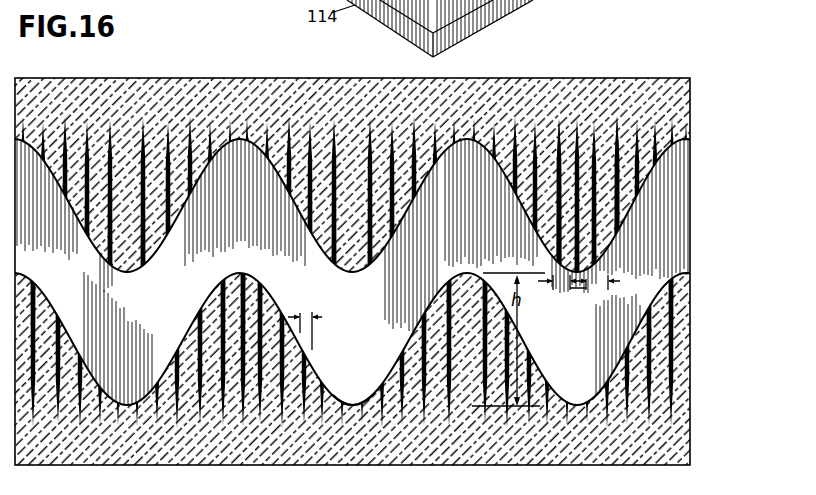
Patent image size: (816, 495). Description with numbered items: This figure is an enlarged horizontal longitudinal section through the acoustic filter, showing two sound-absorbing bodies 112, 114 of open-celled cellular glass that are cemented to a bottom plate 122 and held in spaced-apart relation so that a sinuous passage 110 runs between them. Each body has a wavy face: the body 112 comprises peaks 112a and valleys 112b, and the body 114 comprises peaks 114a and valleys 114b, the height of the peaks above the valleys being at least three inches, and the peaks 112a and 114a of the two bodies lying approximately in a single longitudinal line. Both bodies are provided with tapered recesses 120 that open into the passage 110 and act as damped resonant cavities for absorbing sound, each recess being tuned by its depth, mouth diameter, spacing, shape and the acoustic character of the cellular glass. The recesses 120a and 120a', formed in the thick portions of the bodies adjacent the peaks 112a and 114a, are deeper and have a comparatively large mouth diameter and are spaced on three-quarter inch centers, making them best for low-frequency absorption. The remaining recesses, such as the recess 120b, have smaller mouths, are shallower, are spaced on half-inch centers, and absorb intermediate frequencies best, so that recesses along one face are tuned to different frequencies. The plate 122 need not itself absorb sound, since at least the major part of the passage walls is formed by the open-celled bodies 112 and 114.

The passage 110 is at (617, 341).
The body of open-celled cellular glass 112 is at (683, 92).
The peaks of body 112 112a is at (575, 287).
The valleys of body 112 112b is at (465, 143).
The body of open-celled cellular glass 114 is at (683, 447).
The peaks of body 114 114a is at (464, 272).
The valleys of body 114 114b is at (350, 404).
The recesses 120 is at (109, 270).
The recess 120a is at (594, 173).
The recess 120a' is at (648, 173).
The recess 120b is at (305, 357).
The bottom plate 122 is at (683, 207).